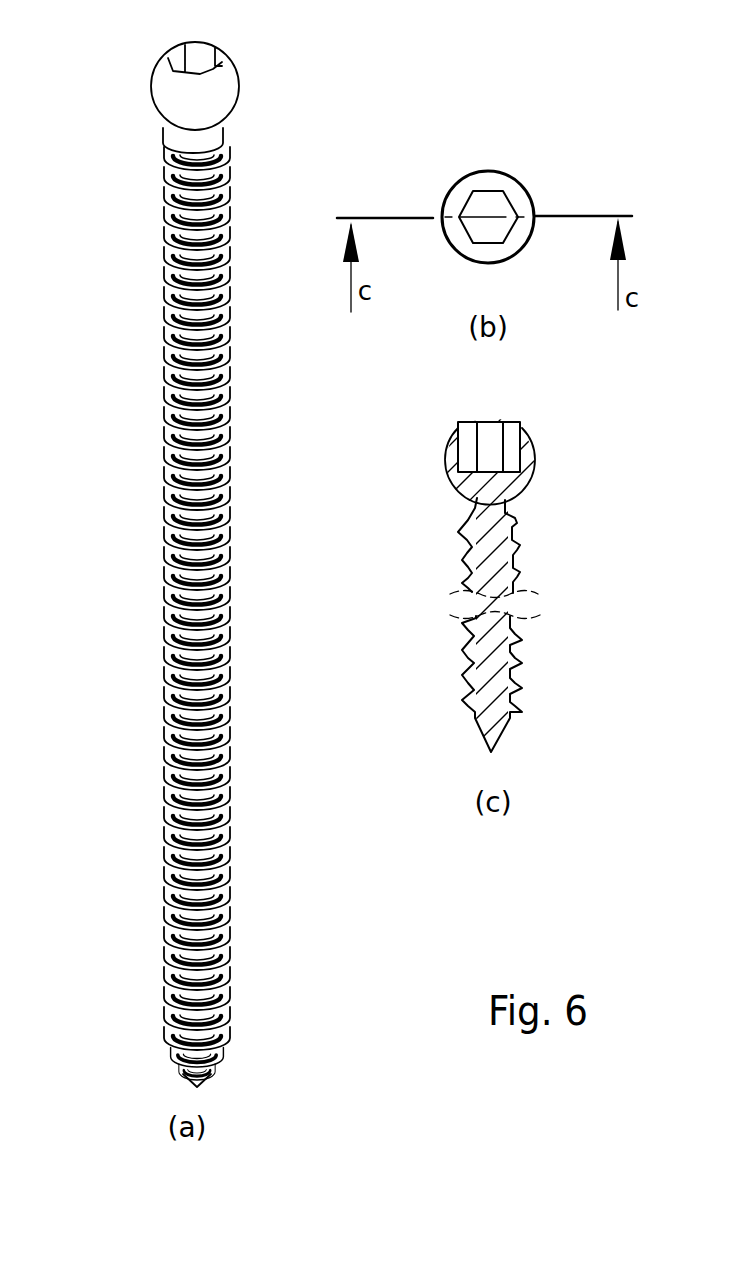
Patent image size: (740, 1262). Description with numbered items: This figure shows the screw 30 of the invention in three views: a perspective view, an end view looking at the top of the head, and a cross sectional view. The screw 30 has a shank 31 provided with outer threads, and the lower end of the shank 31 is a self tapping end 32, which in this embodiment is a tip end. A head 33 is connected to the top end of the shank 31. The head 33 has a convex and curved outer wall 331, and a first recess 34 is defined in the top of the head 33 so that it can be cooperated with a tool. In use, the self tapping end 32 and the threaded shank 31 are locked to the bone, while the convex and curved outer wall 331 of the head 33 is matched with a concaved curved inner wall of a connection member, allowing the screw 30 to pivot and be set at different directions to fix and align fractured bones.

The screw 30 is at (320, 572).
The shank 31 is at (180, 412).
The self tapping end 32 is at (198, 1082).
The head 33 is at (304, 461).
The convex and curved outer wall 331 is at (168, 88).
The first recess 34 is at (205, 50).